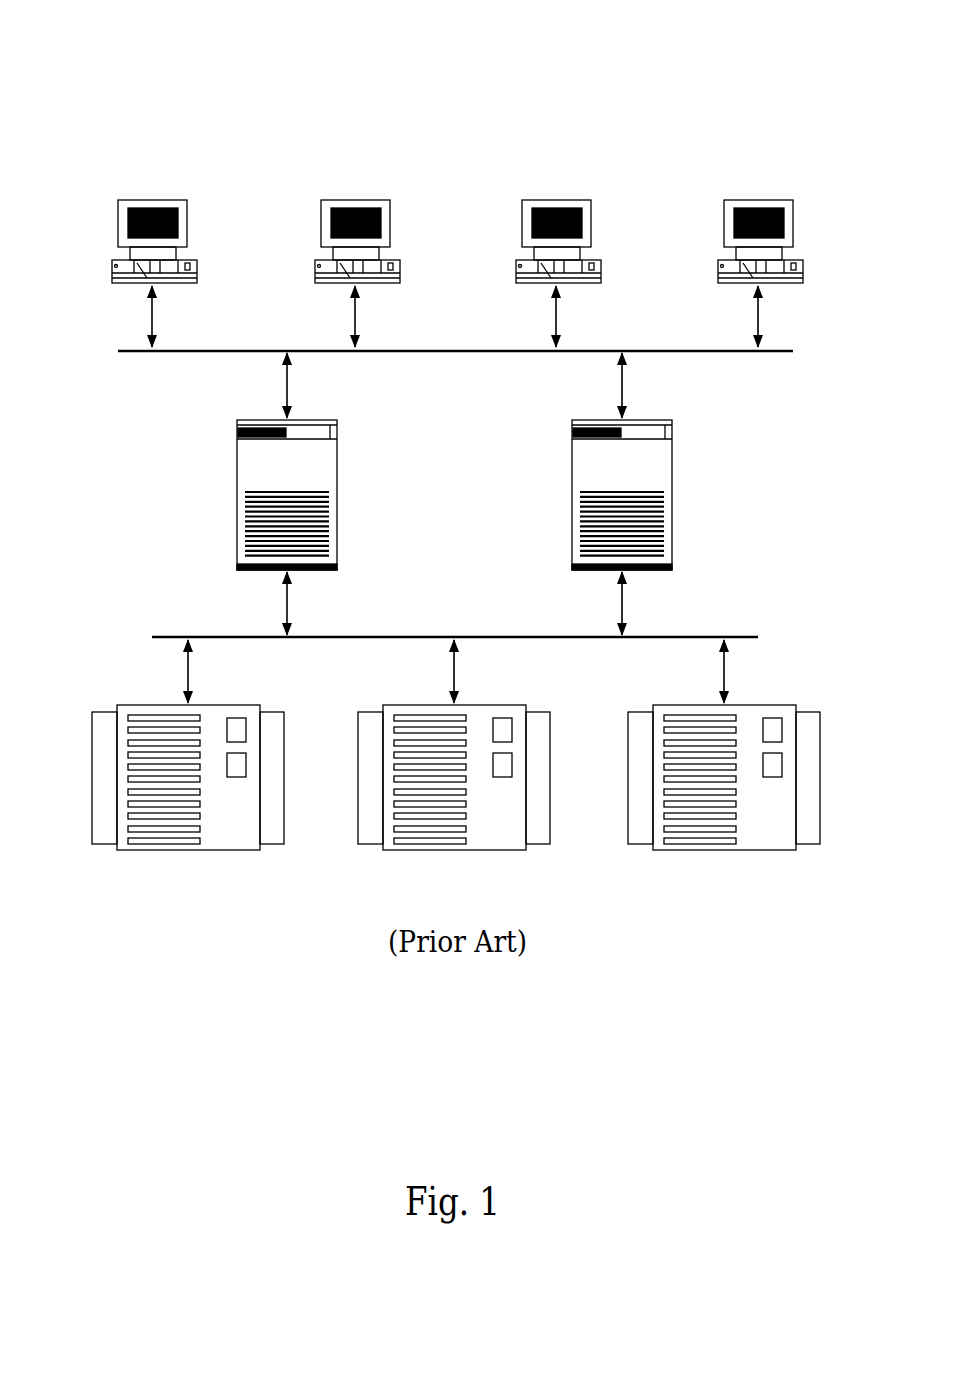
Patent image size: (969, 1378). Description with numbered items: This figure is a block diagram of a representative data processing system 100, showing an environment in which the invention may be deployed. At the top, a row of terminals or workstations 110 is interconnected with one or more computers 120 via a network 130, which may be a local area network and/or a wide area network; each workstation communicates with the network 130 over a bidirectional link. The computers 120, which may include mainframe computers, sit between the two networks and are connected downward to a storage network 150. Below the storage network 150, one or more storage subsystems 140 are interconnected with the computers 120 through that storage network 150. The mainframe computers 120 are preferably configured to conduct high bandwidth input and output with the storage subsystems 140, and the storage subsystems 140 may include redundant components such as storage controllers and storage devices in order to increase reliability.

The data processing system 100 is at (82, 64).
The terminals or workstations 110 is at (188, 200).
The computers 120 is at (337, 420).
The network 130 is at (453, 350).
The storage subsystems 140 is at (284, 712).
The storage network 150 is at (385, 637).